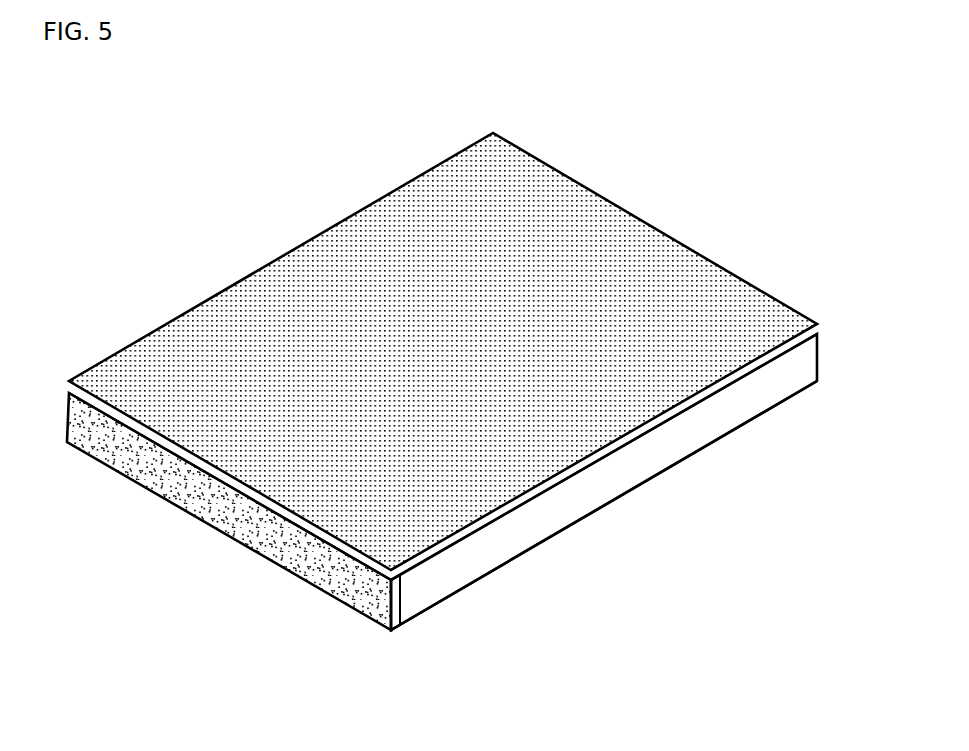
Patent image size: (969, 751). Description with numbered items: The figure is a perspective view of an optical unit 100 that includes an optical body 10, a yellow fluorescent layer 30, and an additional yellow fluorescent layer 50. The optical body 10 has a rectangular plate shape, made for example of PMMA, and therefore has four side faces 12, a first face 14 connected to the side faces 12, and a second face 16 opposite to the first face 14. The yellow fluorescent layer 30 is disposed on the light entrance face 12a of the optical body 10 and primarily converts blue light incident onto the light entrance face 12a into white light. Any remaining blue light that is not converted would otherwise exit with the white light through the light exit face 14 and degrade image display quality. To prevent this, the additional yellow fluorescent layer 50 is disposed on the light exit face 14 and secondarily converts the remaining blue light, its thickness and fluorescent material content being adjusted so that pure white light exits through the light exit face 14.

The optical unit 100 is at (476, 414).
The optical body 10 is at (482, 513).
The side faces 12 is at (573, 513).
The light entrance face 12a is at (403, 599).
The first face 14 is at (785, 356).
The second face 16 is at (773, 408).
The yellow fluorescent layer 30 is at (140, 505).
The additional yellow fluorescent layer 50 is at (383, 218).